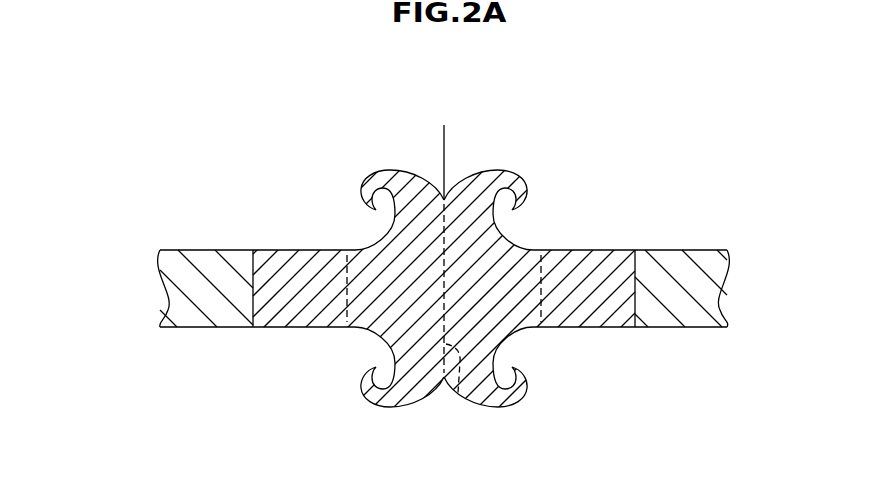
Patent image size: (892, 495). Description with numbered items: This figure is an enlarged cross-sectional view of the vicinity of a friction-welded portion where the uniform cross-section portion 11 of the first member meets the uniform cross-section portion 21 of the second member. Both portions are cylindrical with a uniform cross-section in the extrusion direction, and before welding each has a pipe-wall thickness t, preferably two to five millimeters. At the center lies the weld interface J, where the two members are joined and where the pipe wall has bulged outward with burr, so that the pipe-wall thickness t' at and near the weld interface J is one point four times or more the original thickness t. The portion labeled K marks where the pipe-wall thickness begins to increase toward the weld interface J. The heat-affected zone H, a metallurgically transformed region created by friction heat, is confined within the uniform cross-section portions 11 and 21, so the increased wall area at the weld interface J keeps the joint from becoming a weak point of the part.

The uniform cross-section portion 11 is at (432, 132).
The uniform cross-section portion 21 is at (456, 132).
The HAZ H is at (299, 260).
The portion from which a pipe-wall thickness increases toward the weld interface K is at (347, 312).
The weld interface J is at (458, 393).
The pipe-wall thickness t is at (130, 288).
The pipe-wall thickness after friction welded t' is at (421, 289).